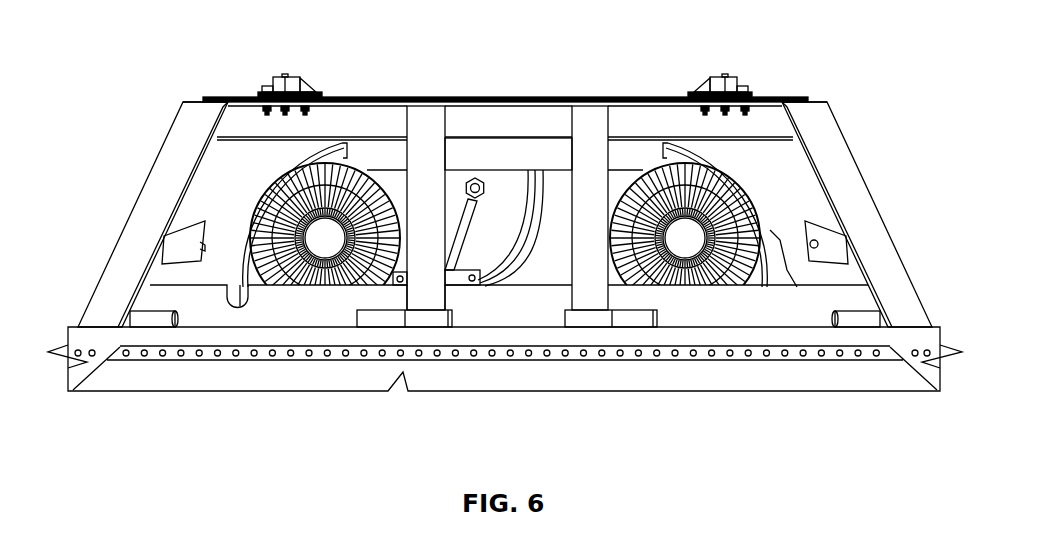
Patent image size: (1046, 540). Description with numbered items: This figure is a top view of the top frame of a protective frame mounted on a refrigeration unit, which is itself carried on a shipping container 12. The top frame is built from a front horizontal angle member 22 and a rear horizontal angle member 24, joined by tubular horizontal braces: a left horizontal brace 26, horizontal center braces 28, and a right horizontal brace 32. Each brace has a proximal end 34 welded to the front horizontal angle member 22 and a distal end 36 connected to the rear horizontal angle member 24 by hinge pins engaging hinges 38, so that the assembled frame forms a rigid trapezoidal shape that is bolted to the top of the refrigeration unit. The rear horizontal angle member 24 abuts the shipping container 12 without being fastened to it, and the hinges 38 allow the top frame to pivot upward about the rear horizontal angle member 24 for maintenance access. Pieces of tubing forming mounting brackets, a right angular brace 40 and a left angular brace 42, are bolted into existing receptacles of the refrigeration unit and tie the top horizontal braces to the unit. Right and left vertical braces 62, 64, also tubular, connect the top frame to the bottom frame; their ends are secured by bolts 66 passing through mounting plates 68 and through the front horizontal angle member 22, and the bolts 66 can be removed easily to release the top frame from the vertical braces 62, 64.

The shipping container 12 is at (218, 378).
The front horizontal angle member 22 is at (472, 125).
The rear horizontal angle member 24 is at (313, 310).
The left horizontal brace 26 is at (840, 150).
The horizontal center brace 28 is at (438, 297).
The right horizontal brace 32 is at (157, 180).
The proximal end 34 is at (100, 300).
The distal end 36 is at (194, 110).
The hinge 38 is at (158, 322).
The right angular brace 40 is at (830, 240).
The left angular brace 42 is at (178, 237).
The right vertical brace 62 is at (718, 77).
The left vertical brace 64 is at (298, 77).
The bolt 66 is at (267, 92).
The mounting plate 68 is at (307, 92).